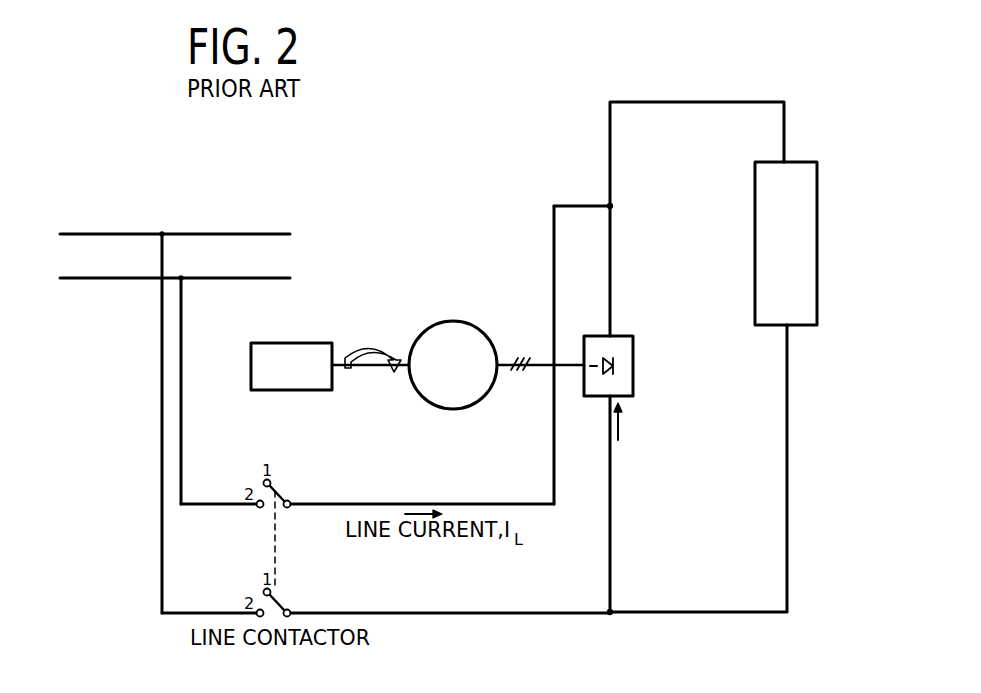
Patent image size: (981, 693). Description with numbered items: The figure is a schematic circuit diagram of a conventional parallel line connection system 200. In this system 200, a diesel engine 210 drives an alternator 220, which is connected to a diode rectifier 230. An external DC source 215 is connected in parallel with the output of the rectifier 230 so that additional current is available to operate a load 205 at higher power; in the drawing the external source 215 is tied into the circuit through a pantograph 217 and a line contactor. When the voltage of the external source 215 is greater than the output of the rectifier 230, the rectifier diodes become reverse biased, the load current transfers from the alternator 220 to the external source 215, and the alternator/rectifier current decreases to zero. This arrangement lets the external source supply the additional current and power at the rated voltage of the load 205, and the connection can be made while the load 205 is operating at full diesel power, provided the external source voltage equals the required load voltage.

The parallel line connection system 200 is at (118, 157).
The load 205 is at (793, 161).
The diesel engine 210 is at (291, 343).
The external DC source 215 is at (138, 198).
The pantograph 217 is at (82, 318).
The alternator 220 is at (476, 328).
The diode rectifier 230 is at (634, 350).